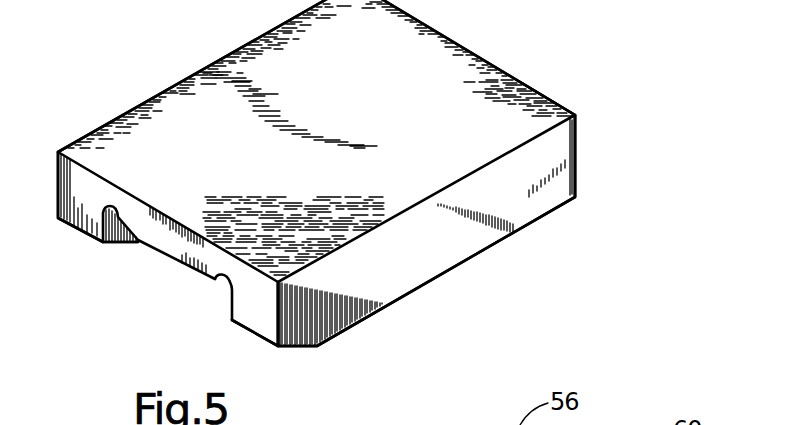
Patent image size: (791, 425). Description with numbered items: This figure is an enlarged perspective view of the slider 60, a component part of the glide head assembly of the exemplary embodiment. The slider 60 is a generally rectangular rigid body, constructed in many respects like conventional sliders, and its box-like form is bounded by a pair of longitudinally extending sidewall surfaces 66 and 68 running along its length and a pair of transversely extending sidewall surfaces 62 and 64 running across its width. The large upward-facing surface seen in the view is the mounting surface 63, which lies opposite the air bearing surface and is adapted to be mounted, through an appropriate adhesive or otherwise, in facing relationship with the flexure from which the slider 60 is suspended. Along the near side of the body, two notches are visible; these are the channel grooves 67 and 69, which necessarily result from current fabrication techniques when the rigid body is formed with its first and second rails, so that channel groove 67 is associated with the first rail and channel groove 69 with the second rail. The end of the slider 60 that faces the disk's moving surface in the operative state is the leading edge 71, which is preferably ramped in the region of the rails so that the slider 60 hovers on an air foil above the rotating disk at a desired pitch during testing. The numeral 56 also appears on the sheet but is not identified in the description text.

The bottom edge 56 is at (123, 243).
The slider 60 is at (608, 146).
The transversely extending sidewall surface 62 is at (180, 242).
The mounting surface 63 is at (520, 98).
The transversely extending sidewall surface 64 is at (453, 42).
The longitudinally extending sidewall surface 66 is at (468, 232).
The channel groove 67 is at (107, 208).
The longitudinally extending sidewall surface 68 is at (188, 78).
The channel groove 69 is at (220, 277).
The leading edge 71 is at (85, 235).